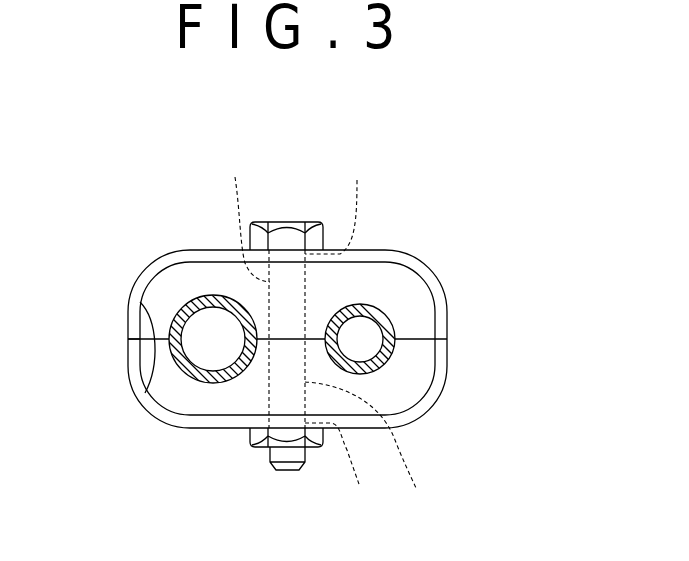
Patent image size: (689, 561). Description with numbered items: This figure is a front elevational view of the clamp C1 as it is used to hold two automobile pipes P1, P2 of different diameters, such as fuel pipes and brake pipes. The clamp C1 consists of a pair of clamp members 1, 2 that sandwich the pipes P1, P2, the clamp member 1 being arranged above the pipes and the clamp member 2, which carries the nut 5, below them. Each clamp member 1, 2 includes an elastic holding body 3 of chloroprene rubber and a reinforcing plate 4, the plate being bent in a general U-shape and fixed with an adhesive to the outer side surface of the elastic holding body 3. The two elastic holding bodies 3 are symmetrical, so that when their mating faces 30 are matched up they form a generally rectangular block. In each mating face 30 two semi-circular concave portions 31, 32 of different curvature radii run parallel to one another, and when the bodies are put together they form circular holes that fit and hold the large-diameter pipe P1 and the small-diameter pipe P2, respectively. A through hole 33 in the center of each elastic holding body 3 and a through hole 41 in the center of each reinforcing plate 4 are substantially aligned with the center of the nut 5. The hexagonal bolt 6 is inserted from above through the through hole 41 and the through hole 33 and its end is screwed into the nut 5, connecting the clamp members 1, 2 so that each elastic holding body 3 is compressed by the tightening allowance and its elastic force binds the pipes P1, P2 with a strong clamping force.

The clamp member 1 is at (409, 252).
The clamp member 2 is at (416, 416).
The elastic holding body 3 is at (173, 278).
The reinforcing plate 4 is at (378, 252).
The nut 5 is at (250, 440).
The hexagonal bolt 6 is at (287, 232).
The mating face 30 is at (142, 306).
The semi-circular concave portion 31 is at (213, 293).
The semi-circular concave portion 32 is at (372, 306).
The through hole 33 is at (324, 336).
The through hole 41 is at (339, 334).
The pipe P1 is at (185, 312).
The pipe P2 is at (386, 320).
The clamp C1 is at (448, 248).